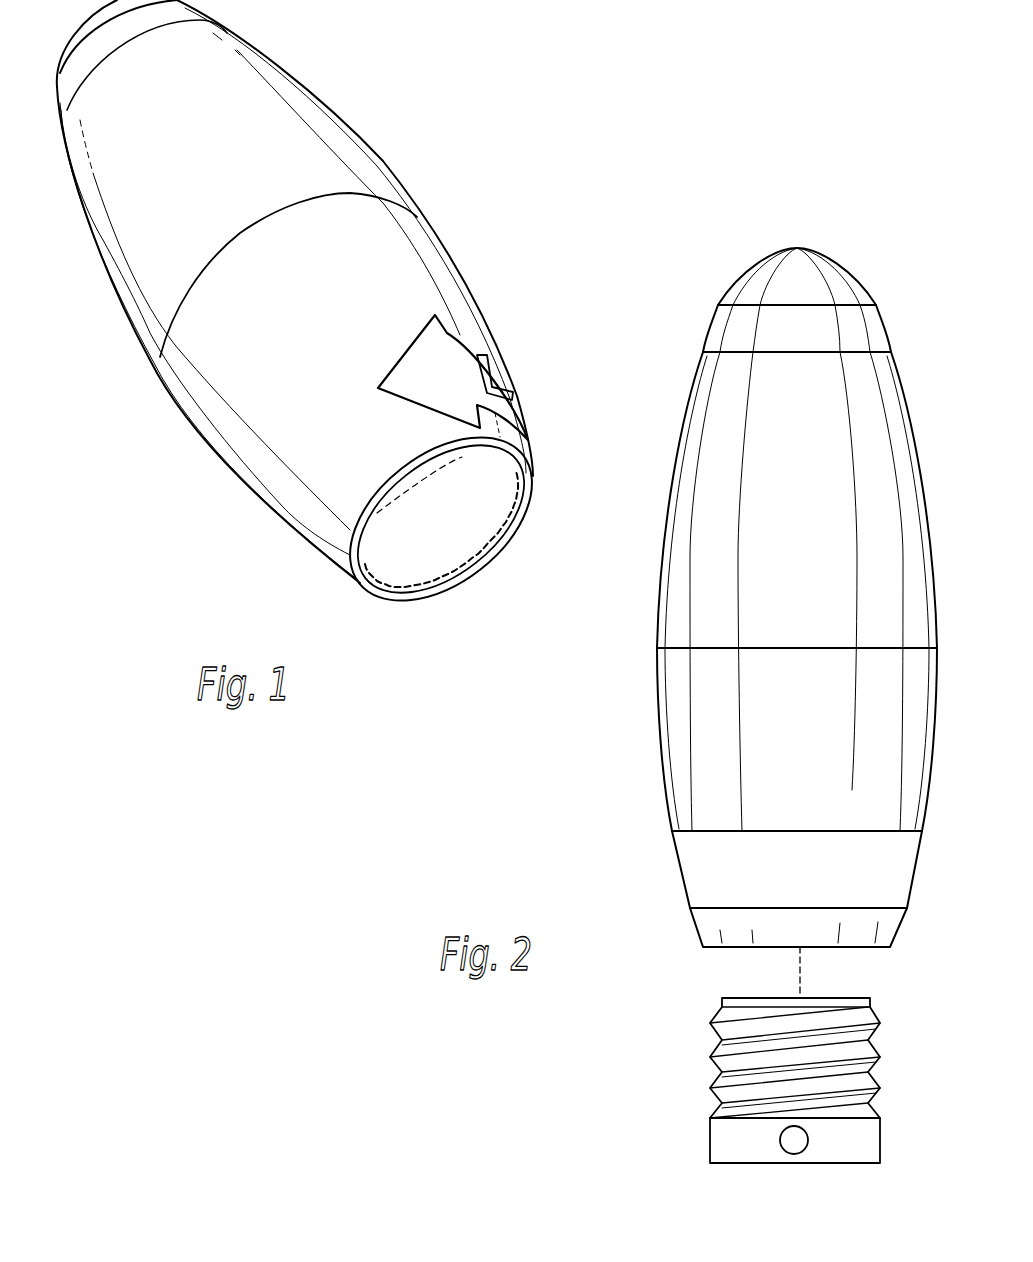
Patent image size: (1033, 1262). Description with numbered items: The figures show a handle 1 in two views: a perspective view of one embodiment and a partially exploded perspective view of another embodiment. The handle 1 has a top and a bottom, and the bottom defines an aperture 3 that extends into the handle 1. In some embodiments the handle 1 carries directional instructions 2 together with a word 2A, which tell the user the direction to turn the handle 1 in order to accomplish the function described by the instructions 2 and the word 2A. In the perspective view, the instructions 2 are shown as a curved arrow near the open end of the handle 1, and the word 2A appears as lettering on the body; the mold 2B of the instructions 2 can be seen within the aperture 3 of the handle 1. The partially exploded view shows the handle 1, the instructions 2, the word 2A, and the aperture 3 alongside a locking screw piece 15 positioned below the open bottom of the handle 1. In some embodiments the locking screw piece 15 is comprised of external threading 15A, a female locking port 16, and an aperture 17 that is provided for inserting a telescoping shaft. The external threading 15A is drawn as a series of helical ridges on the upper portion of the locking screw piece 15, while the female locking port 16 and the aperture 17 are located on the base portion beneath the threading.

In FIG. 1, the handle 1 is at (373, 157).
In FIG. 2, the handle 1 is at (656, 587).
In FIG. 1, the directional instructions 2 is at (463, 373).
In FIG. 2, the directional instructions 2 is at (718, 829).
In FIG. 1, the word 2A is at (492, 382).
In FIG. 2, the word 2A is at (688, 857).
In FIG. 1, the mold of the instructions 2B is at (415, 540).
In FIG. 1, the aperture 3 is at (480, 547).
In FIG. 2, the aperture 3 is at (742, 948).
In FIG. 2, the locking screw piece 15 is at (800, 1086).
In FIG. 2, the external threading 15A is at (718, 1045).
In FIG. 2, the female locking port 16 is at (780, 1138).
In FIG. 2, the aperture 17 is at (840, 1165).